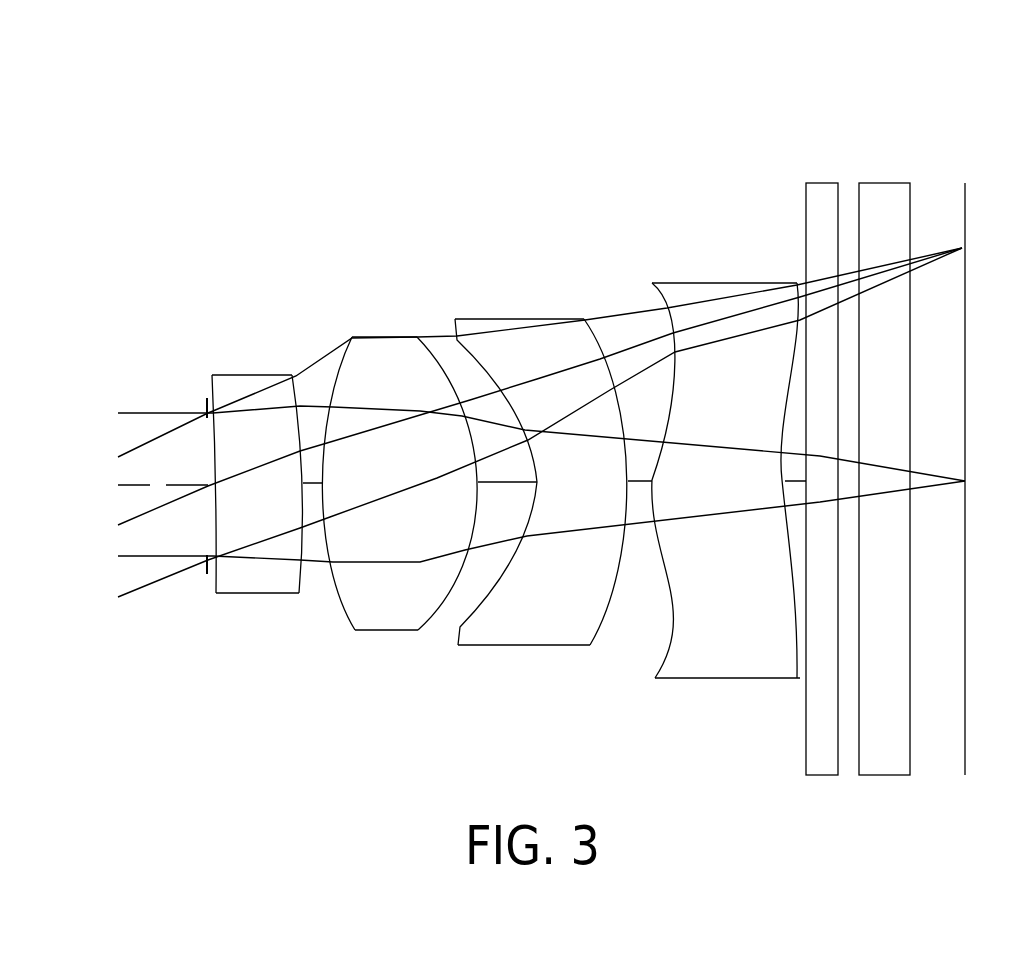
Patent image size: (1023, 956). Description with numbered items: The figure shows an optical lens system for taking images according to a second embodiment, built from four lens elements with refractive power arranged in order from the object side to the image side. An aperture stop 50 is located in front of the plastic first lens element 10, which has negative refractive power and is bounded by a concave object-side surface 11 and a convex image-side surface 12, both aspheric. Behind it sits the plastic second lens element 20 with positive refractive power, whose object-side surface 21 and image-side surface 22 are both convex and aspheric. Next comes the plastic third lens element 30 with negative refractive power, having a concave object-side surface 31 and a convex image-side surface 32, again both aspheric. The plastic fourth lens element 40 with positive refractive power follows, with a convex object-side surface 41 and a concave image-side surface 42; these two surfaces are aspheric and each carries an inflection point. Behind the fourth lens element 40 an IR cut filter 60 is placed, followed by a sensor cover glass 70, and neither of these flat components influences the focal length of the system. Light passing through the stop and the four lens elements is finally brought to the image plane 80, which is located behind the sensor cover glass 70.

The first lens element 10 is at (260, 477).
The object-side surface of the first lens element 11 is at (217, 530).
The image-side surface of the first lens element 12 is at (298, 548).
The second lens element 20 is at (399, 497).
The object-side surface of the second lens element 21 is at (335, 578).
The image-side surface of the second lens element 22 is at (432, 616).
The third lens element 30 is at (558, 470).
The object-side surface of the third lens element 31 is at (493, 573).
The image-side surface of the third lens element 32 is at (607, 598).
The fourth lens element 40 is at (729, 457).
The object-side surface of the fourth lens element 41 is at (678, 607).
The image-side surface of the fourth lens element 42 is at (792, 588).
The aperture stop 50 is at (198, 400).
The IR cut filter 60 is at (812, 194).
The sensor cover glass 70 is at (876, 196).
The image plane 80 is at (969, 200).